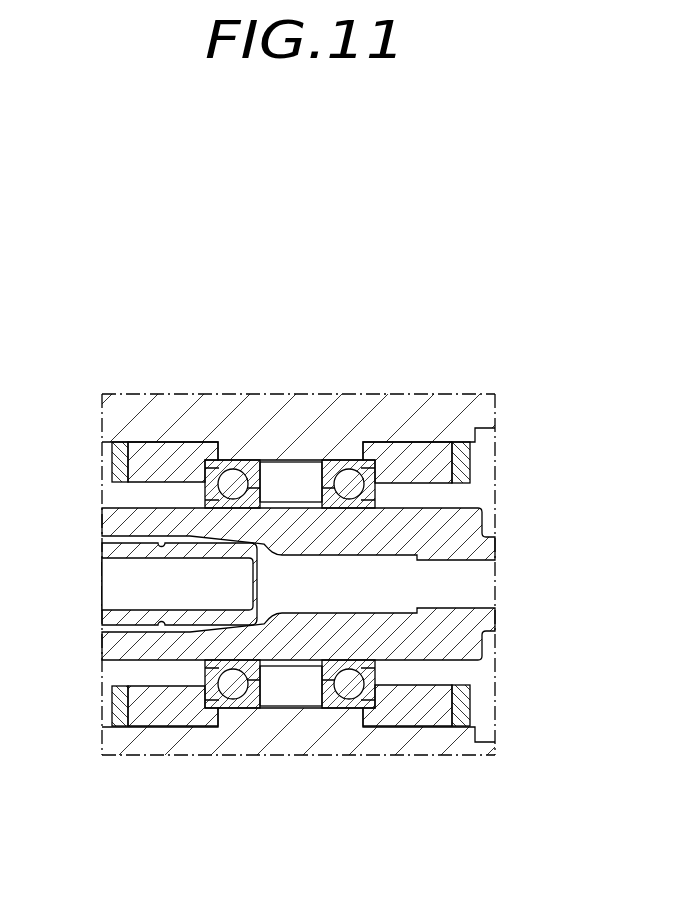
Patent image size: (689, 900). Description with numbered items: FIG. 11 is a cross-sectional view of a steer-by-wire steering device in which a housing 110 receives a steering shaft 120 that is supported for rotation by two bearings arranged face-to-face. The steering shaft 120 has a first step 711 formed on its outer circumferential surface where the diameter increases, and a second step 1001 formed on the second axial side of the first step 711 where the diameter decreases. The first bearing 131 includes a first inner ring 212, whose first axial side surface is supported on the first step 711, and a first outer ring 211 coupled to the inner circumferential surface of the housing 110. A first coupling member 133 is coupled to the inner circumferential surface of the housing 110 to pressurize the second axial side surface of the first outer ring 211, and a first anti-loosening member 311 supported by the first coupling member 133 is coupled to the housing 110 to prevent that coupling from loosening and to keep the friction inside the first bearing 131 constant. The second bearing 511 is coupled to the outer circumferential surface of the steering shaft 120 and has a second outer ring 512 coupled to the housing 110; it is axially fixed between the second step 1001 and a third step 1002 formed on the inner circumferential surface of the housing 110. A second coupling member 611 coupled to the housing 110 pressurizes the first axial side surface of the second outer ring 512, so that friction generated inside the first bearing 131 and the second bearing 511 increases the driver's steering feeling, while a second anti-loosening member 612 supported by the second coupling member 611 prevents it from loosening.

The housing 110 is at (317, 738).
The steering shaft 120 is at (329, 658).
The first bearing 131 is at (426, 527).
The first coupling member 133 is at (437, 452).
The first outer ring 211 is at (332, 462).
The first inner ring 212 is at (413, 510).
The first anti-loosening member 311 is at (463, 455).
The second bearing 511 is at (204, 446).
The second outer ring 512 is at (262, 462).
The second coupling member 611 is at (145, 453).
The second anti-loosening member 612 is at (113, 460).
The first step 711 is at (297, 490).
The second step 1001 is at (288, 515).
The third step 1002 is at (121, 535).